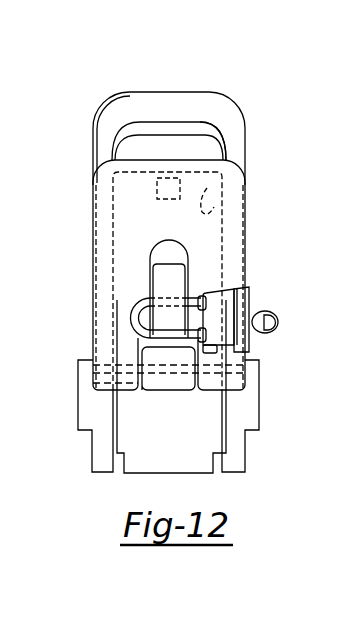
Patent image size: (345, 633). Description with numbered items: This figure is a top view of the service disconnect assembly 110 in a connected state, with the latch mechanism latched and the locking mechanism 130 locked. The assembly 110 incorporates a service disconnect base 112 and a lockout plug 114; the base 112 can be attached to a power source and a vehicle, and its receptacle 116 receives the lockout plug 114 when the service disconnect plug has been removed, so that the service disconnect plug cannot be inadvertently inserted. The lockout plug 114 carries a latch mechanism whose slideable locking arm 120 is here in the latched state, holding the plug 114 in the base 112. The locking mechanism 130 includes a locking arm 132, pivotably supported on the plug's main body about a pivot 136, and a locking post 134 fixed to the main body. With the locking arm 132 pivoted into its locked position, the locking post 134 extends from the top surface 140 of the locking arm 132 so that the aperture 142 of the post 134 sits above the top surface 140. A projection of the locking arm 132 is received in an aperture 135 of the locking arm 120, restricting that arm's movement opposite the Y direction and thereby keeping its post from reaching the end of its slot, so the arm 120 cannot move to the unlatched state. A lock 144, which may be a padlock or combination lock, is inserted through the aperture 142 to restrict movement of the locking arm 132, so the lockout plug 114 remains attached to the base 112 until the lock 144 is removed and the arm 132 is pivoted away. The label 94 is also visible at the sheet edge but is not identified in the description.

The service disconnect assembly 110 is at (73, 91).
The service disconnect base 112 is at (88, 134).
The lockout plug 114 is at (224, 125).
The receptacle 116 is at (184, 170).
The locking arm 120 is at (130, 103).
The locking mechanism 130 is at (86, 191).
The locking arm 132 is at (190, 165).
The locking post 134 is at (158, 268).
The aperture 135 is at (156, 125).
The pivot 136 is at (244, 368).
The top surface 140 is at (212, 210).
The aperture 142 is at (141, 298).
The lock 144 is at (246, 338).
The frame 94 is at (7, 407).